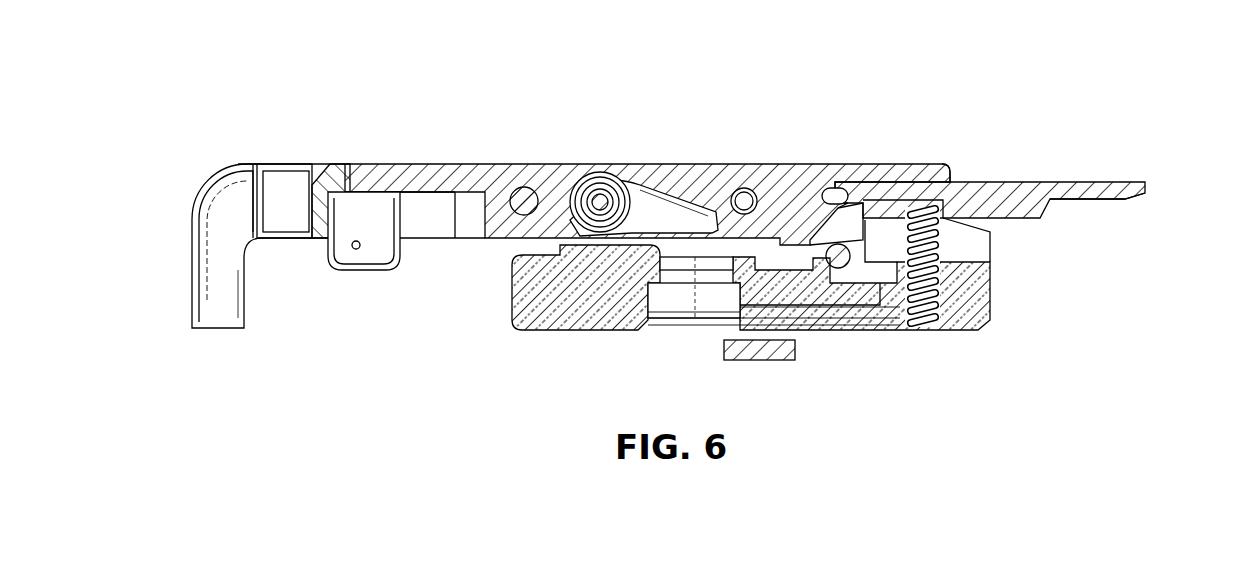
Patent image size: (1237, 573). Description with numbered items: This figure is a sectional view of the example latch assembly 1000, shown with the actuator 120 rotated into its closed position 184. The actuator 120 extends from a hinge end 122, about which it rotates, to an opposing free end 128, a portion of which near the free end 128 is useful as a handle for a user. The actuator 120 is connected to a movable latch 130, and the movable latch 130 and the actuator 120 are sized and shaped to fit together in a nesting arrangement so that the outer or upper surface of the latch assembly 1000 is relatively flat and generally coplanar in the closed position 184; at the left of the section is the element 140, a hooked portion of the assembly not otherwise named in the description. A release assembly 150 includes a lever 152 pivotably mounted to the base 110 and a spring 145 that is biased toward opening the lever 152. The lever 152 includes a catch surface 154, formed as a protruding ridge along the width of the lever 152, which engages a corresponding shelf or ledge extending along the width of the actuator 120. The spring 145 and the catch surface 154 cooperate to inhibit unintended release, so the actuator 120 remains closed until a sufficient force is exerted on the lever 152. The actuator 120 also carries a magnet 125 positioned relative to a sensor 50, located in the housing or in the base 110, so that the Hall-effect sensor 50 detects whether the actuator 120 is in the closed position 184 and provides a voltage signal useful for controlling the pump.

The latch assembly 1000 is at (1040, 95).
The sensor 50 is at (778, 362).
The base 110 is at (990, 287).
The actuator 120 is at (703, 164).
The hinge end 122 is at (595, 195).
The magnet 125 is at (760, 164).
The free end 128 is at (950, 164).
The movable latch 130 is at (283, 164).
The hook 140 is at (172, 340).
The spring 145 is at (925, 308).
The release assembly 150 is at (1065, 222).
The lever 152 is at (1092, 182).
The catch surface 154 is at (855, 190).
The closed position 184 is at (677, 122).